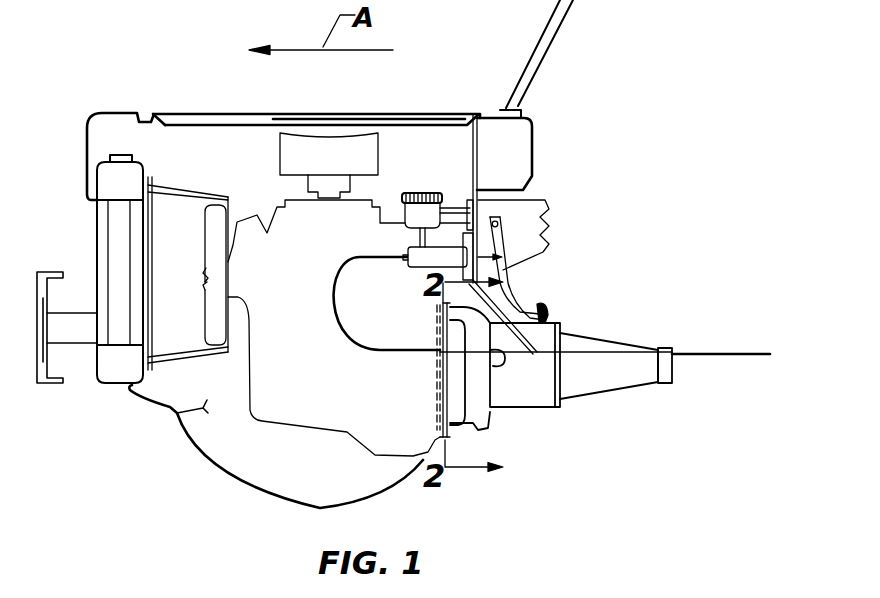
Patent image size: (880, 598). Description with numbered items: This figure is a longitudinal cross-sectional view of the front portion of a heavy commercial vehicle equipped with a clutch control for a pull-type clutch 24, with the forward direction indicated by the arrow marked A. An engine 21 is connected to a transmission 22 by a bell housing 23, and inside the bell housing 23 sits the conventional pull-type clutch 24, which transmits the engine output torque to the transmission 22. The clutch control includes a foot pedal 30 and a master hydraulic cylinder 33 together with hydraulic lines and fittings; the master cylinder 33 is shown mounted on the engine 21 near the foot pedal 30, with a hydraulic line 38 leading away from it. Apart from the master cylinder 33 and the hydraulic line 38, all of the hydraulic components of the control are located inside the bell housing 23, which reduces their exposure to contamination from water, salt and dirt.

The engine 21 is at (293, 290).
The transmission 22 is at (561, 381).
The bell housing 23 is at (481, 401).
The pull-type clutch 24 is at (401, 367).
The foot pedal 30 is at (548, 270).
The master hydraulic cylinder 33 is at (428, 262).
The hydraulic line 38 is at (367, 289).